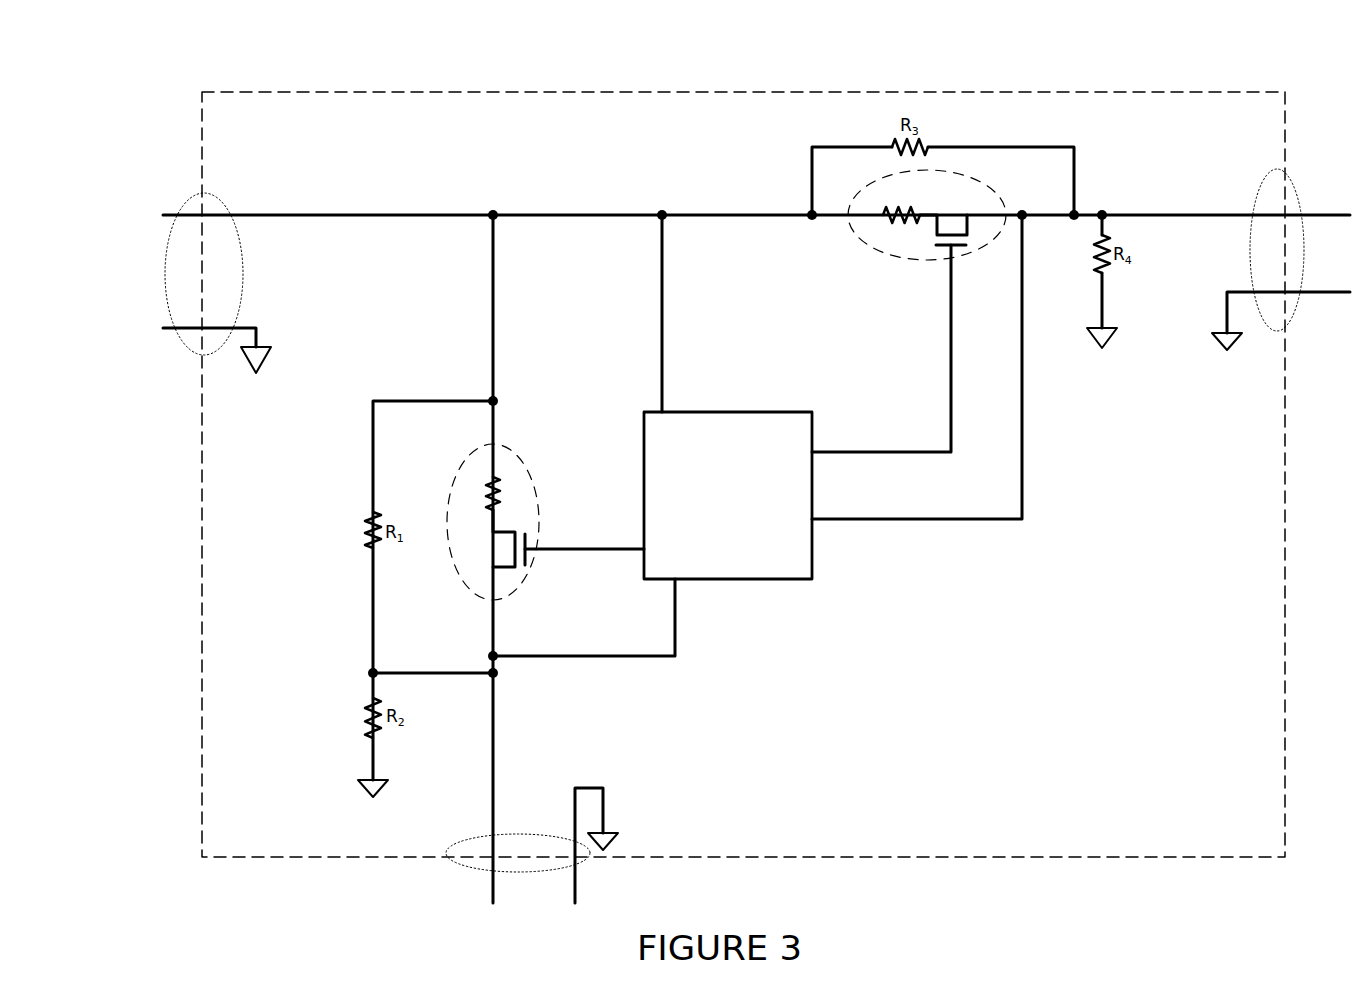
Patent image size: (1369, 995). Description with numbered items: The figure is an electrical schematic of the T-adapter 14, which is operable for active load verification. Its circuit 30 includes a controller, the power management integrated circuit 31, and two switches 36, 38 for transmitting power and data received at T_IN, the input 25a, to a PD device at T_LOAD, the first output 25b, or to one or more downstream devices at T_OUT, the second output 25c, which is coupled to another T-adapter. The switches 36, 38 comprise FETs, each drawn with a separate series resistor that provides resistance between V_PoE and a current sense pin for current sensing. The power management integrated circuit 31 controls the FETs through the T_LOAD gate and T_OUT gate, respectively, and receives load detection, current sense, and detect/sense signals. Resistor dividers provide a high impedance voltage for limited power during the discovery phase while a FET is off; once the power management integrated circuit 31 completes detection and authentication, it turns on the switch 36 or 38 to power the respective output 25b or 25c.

The T-adapter 14 is at (283, 92).
The circuit 30 is at (431, 158).
The input 25a is at (245, 268).
The first output 25b is at (508, 822).
The second output 25c is at (1292, 172).
The power management integrated circuit 31 is at (718, 412).
The switch 36 is at (519, 446).
The switch 38 is at (878, 252).